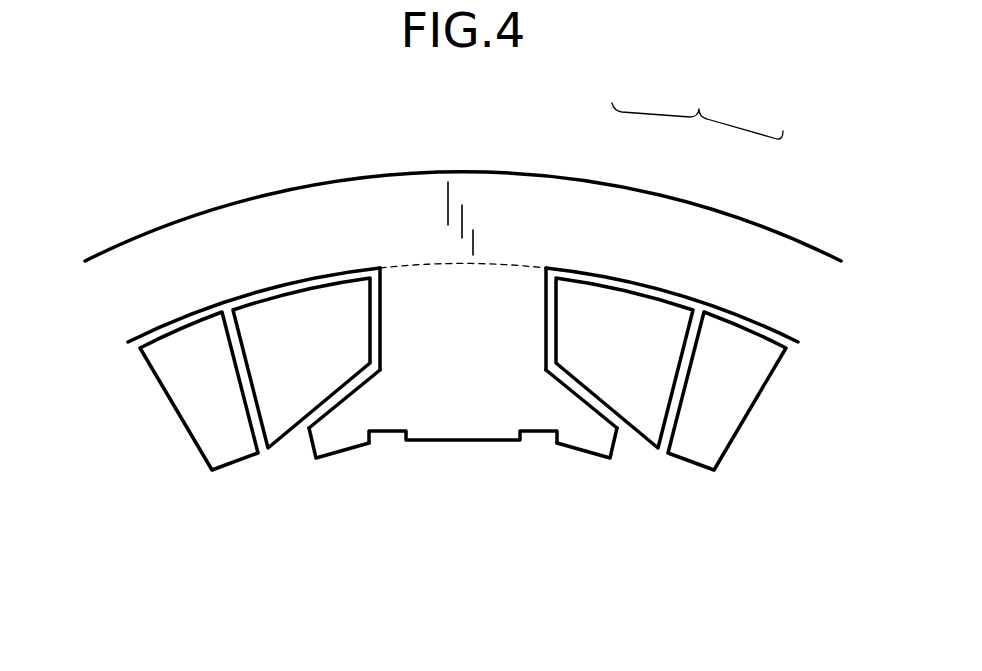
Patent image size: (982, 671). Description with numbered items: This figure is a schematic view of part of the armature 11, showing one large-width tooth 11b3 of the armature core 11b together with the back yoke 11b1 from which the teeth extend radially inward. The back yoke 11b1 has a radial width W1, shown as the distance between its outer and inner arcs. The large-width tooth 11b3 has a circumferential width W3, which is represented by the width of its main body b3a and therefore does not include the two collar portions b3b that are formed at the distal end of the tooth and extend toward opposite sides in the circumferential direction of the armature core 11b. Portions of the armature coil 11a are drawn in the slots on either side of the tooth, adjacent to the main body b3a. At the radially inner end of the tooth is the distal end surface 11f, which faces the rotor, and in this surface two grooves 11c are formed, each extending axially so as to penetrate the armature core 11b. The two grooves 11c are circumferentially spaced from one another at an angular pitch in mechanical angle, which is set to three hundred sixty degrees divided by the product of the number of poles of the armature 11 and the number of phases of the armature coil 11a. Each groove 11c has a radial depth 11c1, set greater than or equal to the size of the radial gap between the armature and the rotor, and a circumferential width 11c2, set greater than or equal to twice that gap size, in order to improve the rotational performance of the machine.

The armature 11 is at (362, 168).
The armature coil 11a is at (285, 358).
The armature core 11b is at (697, 111).
The back yoke 11b1 is at (652, 240).
The large-width tooth 11b3 is at (490, 287).
The groove 11c is at (406, 442).
The radial depth 11c1 is at (357, 395).
The circumferential width 11c2 is at (568, 420).
The distal end surface 11f is at (577, 455).
The main body b3a is at (497, 346).
The collar portion b3b is at (337, 433).
The radial width W1 is at (252, 198).
The circumferential width W3 is at (546, 430).